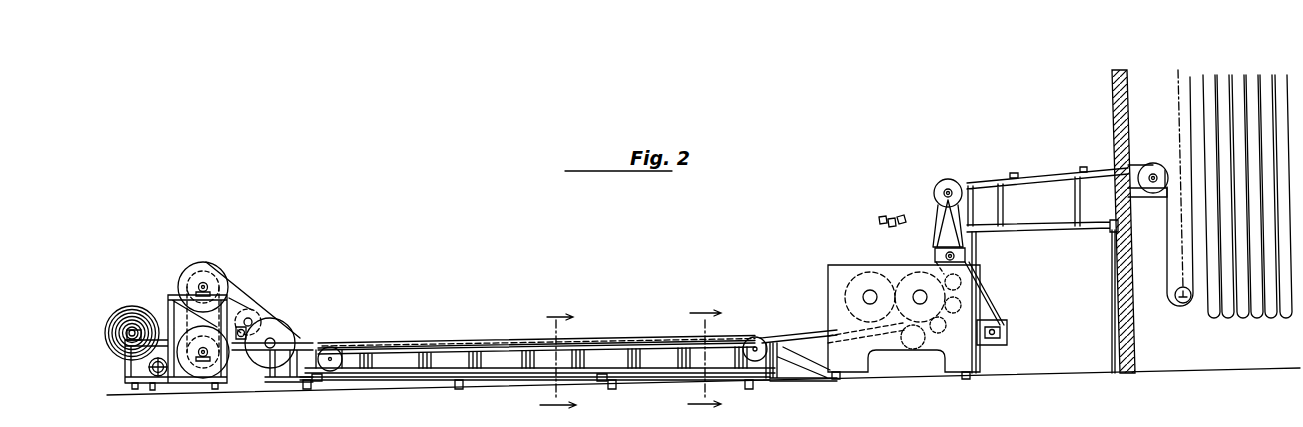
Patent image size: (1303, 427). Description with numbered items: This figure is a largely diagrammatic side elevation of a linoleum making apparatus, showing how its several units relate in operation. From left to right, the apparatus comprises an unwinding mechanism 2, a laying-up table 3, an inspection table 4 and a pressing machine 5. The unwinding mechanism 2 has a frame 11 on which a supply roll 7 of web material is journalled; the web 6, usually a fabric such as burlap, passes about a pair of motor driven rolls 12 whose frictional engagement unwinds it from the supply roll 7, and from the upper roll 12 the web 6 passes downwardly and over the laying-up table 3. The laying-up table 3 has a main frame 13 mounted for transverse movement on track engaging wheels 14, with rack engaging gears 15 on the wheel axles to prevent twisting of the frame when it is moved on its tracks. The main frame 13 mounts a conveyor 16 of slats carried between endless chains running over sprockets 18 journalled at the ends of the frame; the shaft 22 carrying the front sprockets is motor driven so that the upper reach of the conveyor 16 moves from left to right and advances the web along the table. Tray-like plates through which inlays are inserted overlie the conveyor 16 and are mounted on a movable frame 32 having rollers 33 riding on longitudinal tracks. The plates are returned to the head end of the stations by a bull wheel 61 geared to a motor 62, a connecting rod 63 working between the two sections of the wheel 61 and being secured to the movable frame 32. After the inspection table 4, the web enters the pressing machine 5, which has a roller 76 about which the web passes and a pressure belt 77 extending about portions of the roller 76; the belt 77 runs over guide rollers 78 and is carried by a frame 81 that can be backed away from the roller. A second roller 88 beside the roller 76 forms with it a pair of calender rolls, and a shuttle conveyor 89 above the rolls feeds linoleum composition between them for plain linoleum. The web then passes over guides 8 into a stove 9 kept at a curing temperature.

The unwinding mechanism 2 is at (170, 297).
The laying-up table 3 is at (495, 334).
The inspection table 4 is at (794, 332).
The pressing machine 5 is at (840, 271).
The web 6 is at (229, 289).
The supply roll 7 is at (128, 323).
The guides 8 is at (949, 180).
The stove 9 is at (1178, 340).
The frame 11 is at (159, 380).
The motor driven rolls 12 is at (207, 275).
The main frame 13 is at (389, 381).
The track engaging wheels 14 is at (307, 390).
The rack engaging gears 15 is at (300, 380).
The conveyor 16 is at (385, 366).
The sprockets 18 is at (320, 362).
The shaft 22 is at (755, 339).
The movable frame 32 is at (430, 341).
The rollers 33 is at (378, 343).
The bull wheel 61 is at (273, 330).
The motor 62 is at (250, 309).
The connecting rod 63 is at (306, 347).
The roller 76 is at (910, 278).
The pressure belt 77 is at (995, 306).
The guide rollers 78 is at (984, 269).
The frame 81 is at (989, 297).
The second roller 88 is at (870, 273).
The conveyor 89 is at (886, 216).